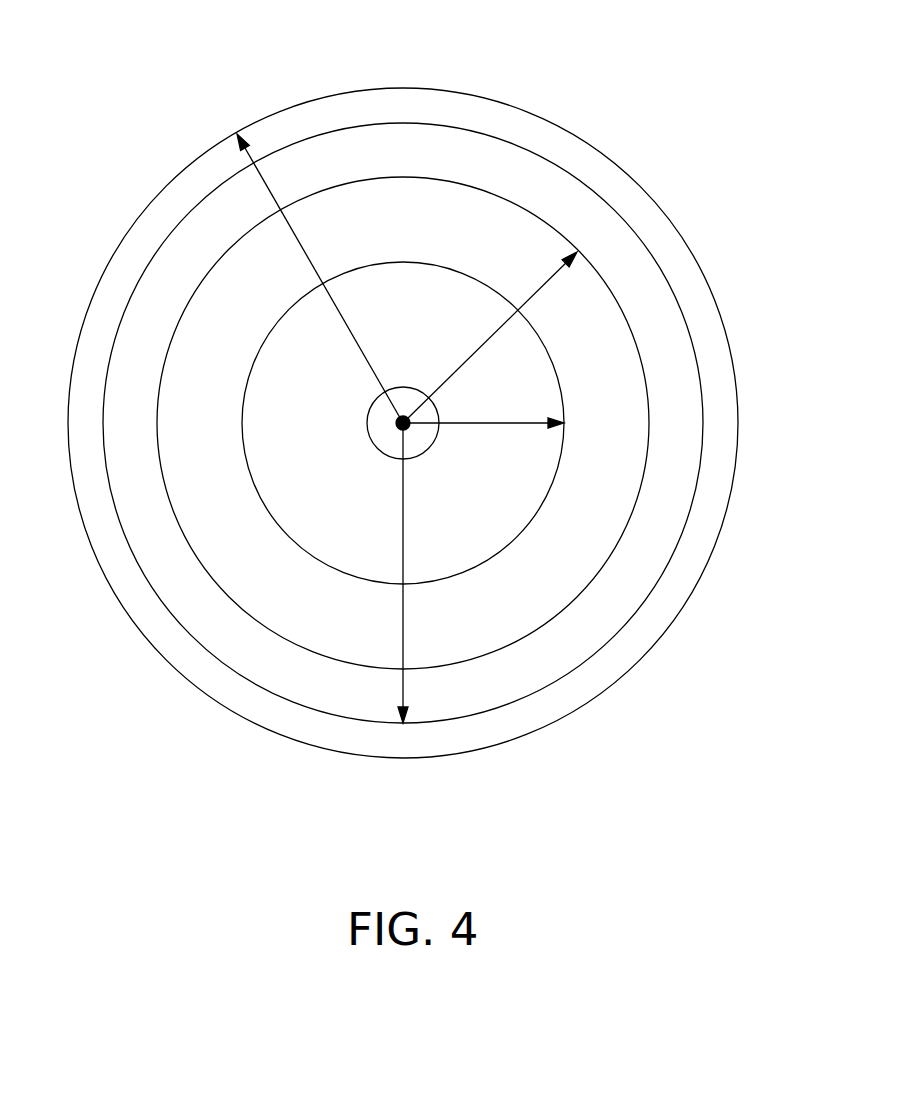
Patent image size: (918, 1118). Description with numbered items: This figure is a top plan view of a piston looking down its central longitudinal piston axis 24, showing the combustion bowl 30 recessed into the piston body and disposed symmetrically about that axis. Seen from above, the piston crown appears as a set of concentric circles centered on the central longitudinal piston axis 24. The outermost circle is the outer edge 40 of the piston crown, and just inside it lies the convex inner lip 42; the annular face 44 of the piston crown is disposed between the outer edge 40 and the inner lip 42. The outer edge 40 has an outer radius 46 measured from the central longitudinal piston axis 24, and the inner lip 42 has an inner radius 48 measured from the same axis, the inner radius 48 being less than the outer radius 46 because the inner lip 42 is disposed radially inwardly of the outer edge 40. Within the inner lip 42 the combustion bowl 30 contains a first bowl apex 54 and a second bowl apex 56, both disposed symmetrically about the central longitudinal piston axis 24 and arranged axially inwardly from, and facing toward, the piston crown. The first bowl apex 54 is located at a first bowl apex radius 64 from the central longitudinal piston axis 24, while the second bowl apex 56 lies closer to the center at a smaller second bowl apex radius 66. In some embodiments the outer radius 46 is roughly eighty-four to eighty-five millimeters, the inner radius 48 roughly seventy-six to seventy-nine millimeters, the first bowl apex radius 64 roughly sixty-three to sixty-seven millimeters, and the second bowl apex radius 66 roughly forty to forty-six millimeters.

The central longitudinal piston axis 24 is at (408, 428).
The combustion bowl 30 is at (498, 526).
The outer edge 40 is at (170, 183).
The inner lip 42 is at (470, 128).
The face 44 is at (329, 102).
The outer radius 46 is at (350, 333).
The inner radius 48 is at (402, 560).
The first bowl apex 54 is at (538, 215).
The second bowl apex 56 is at (553, 357).
The first bowl apex radius 64 is at (490, 333).
The second bowl apex radius 66 is at (502, 420).